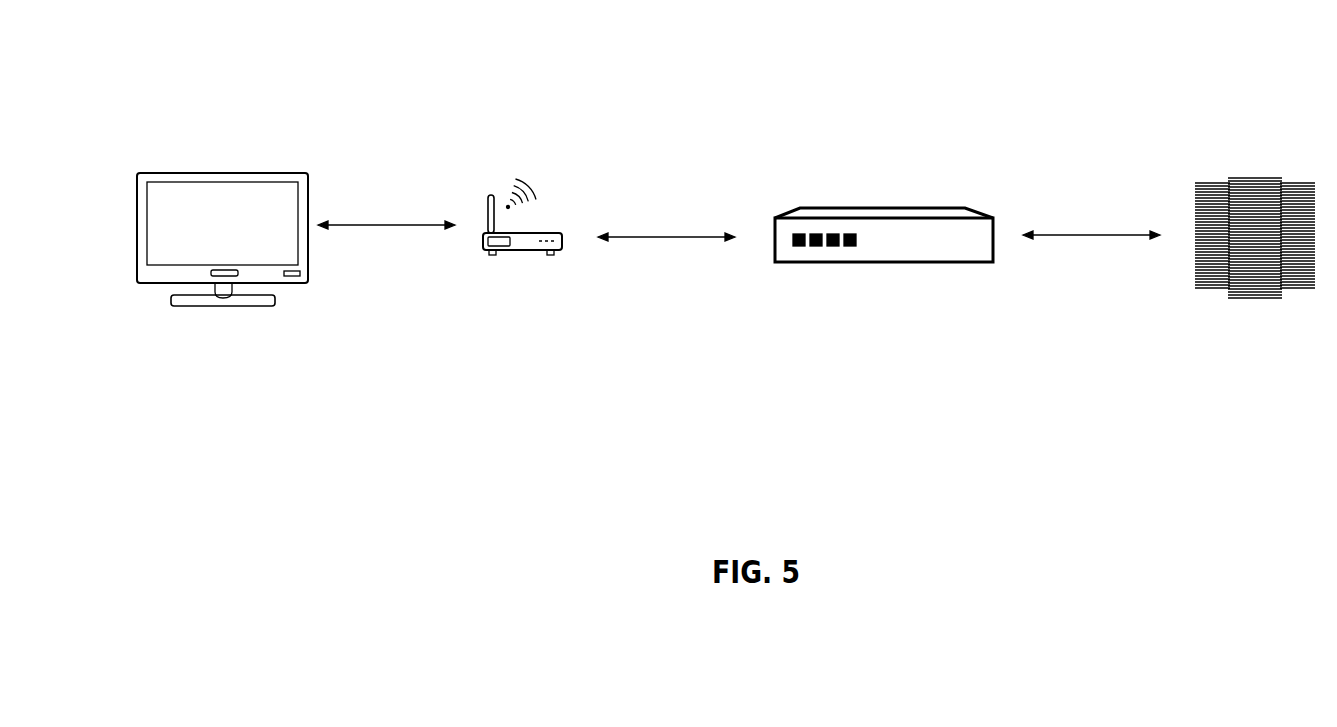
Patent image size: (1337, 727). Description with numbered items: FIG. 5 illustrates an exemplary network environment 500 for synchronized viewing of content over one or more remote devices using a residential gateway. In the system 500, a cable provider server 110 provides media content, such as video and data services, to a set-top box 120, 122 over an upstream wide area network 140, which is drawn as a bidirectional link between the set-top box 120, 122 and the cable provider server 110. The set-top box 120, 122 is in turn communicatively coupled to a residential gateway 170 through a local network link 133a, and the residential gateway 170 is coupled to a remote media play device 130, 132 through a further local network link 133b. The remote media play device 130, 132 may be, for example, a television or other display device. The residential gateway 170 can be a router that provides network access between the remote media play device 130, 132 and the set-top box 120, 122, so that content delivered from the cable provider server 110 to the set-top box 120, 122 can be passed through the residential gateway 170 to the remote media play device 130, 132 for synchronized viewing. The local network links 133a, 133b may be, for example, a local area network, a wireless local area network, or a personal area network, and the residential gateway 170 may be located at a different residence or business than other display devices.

The network environment 500 is at (882, 120).
The remote media play device 130 is at (222, 305).
The remote media play device 132 is at (222, 239).
The local network link 133b is at (382, 253).
The residential gateway 170 is at (522, 273).
The local network link 133a is at (672, 265).
The set-top box 120 is at (884, 292).
The set-top box 122 is at (883, 275).
The wide area network 140 is at (1087, 258).
The cable provider server 110 is at (1255, 327).